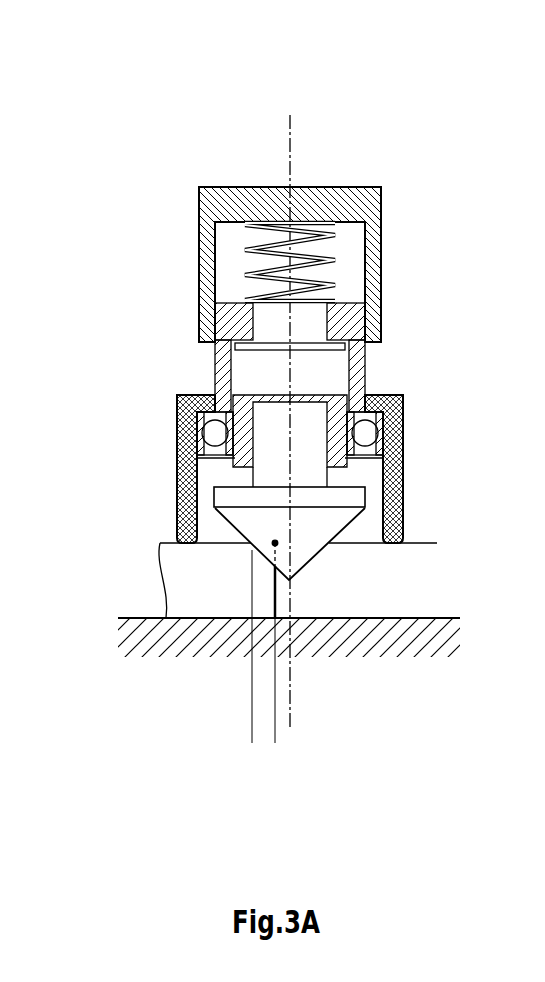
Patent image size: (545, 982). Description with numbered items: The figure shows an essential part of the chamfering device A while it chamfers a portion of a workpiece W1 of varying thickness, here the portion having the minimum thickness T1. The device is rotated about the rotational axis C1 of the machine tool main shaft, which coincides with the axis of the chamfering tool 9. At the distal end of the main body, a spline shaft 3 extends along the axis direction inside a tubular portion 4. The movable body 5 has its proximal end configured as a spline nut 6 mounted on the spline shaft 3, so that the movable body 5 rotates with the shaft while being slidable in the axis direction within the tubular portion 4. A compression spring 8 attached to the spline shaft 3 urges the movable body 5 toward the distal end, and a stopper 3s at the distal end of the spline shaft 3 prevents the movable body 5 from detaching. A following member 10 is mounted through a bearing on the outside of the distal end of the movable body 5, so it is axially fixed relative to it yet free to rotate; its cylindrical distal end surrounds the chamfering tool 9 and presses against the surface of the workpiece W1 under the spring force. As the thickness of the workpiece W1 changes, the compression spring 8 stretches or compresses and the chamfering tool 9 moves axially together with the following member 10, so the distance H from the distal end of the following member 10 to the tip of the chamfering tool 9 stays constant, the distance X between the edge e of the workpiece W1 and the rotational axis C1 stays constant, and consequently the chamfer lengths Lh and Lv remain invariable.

The chamfering device A is at (152, 158).
The rotational axis C1 is at (290, 150).
The spline shaft 3 is at (250, 262).
The stopper 3s is at (337, 350).
The tubular portion 4 is at (375, 258).
The movable body 5 is at (217, 362).
The spline nut 6 is at (355, 318).
The compression spring 8 is at (333, 243).
The chamfering tool 9 is at (240, 518).
The following member 10 is at (180, 433).
The workpiece W1 is at (172, 573).
The edge of the workpiece e is at (275, 543).
The minimum thickness T1 is at (227, 543).
The vertical length of the chamfered portion Lv is at (283, 568).
The distance from following member to tool tip H is at (292, 580).
The distance between edge and rotational axis X is at (258, 698).
The horizontal length of the chamfered portion Lh is at (285, 743).